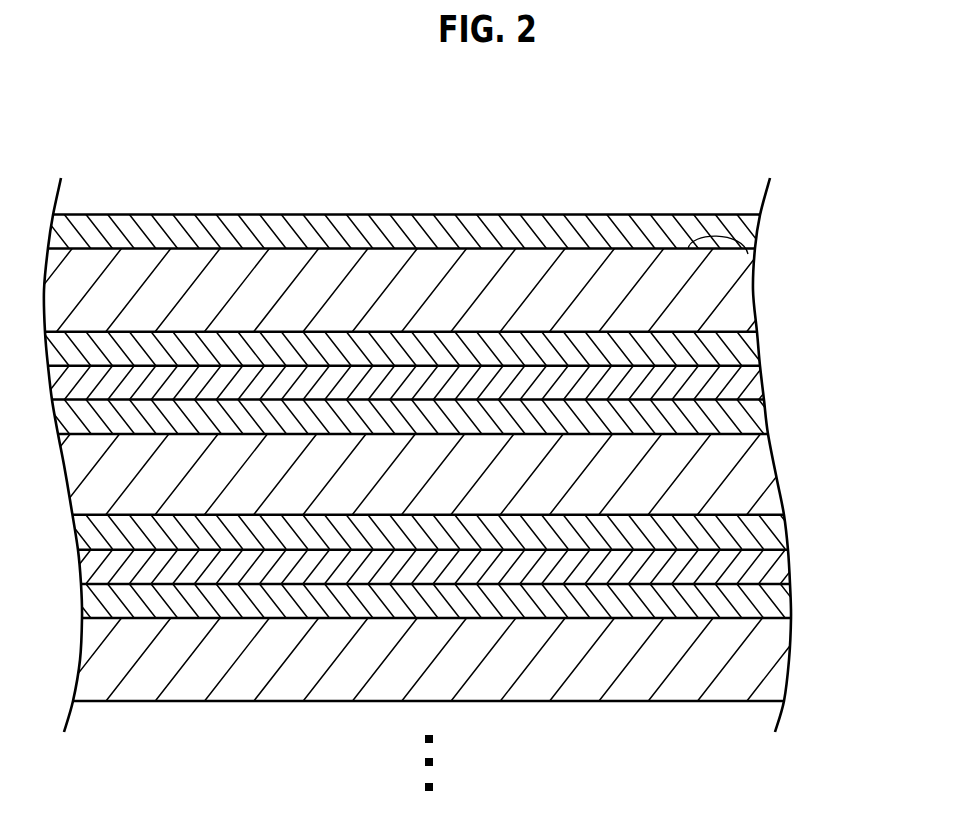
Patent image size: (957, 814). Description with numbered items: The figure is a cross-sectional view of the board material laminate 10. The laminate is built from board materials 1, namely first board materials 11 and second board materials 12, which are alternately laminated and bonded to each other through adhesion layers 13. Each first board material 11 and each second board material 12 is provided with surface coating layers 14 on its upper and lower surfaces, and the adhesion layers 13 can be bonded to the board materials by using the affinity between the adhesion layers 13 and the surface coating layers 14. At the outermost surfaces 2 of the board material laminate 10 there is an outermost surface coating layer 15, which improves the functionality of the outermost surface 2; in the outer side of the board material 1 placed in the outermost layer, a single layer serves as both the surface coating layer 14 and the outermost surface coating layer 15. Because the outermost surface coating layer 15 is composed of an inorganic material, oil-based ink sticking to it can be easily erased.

The board material laminate 10 is at (441, 182).
The board material 1 is at (758, 665).
The outermost surface 2 is at (748, 254).
The first board material 11 is at (742, 420).
The second board material 12 is at (740, 305).
The adhesion layer 13 is at (742, 385).
The surface coating layer 14 is at (742, 350).
The outermost surface coating layer 15 is at (742, 230).